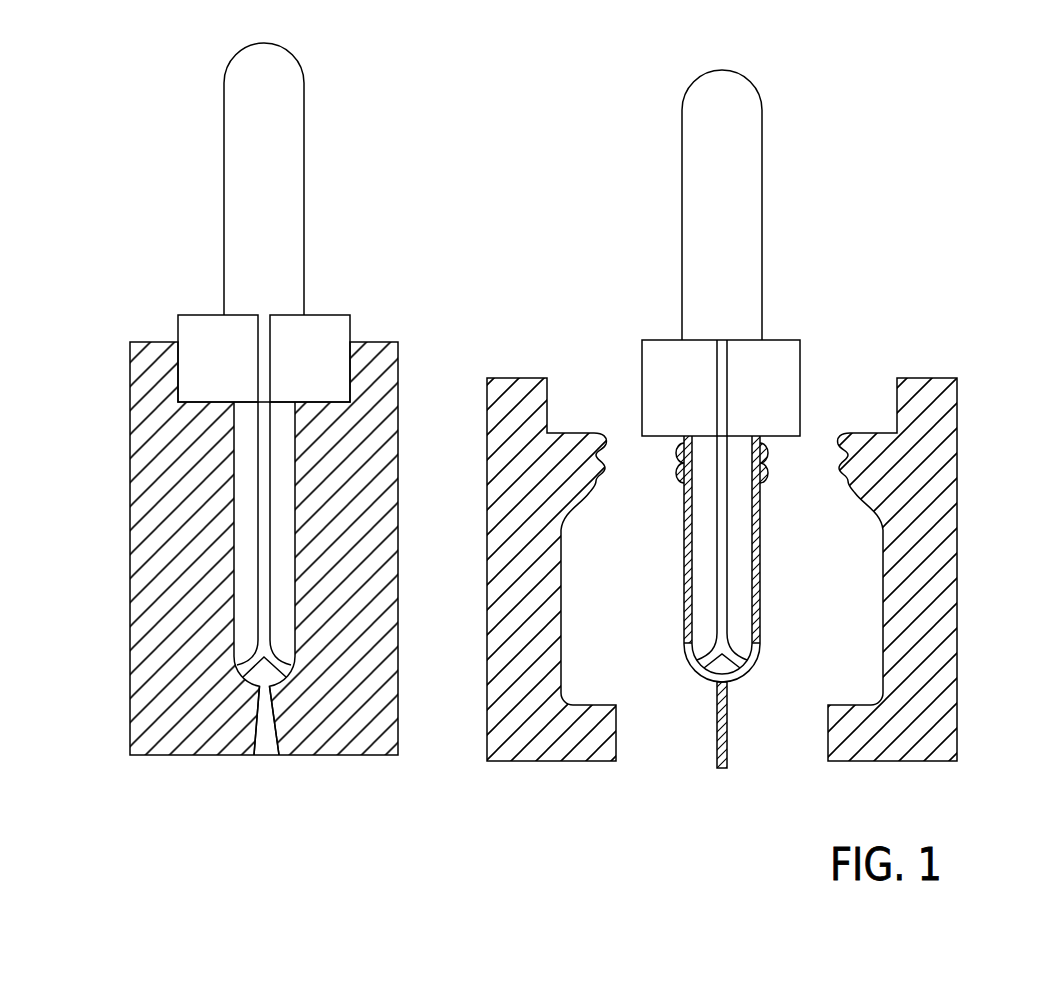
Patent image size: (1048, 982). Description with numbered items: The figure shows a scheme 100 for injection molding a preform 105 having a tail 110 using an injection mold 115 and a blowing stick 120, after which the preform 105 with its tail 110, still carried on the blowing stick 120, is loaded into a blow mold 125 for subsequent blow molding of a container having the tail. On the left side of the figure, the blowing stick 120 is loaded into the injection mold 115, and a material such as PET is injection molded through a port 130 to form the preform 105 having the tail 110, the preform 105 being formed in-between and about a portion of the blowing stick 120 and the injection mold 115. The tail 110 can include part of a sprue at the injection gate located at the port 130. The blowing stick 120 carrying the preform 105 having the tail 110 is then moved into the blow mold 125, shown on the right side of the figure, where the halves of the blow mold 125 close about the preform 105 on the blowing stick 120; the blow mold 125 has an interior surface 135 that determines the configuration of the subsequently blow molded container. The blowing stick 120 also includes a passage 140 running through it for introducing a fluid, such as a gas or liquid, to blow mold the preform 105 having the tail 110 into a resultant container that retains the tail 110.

The scheme 100 is at (138, 86).
The preform 105 is at (761, 543).
The tail 110 is at (710, 742).
The injection mold 115 is at (128, 733).
The blowing stick 120 is at (333, 305).
The blow mold 125 is at (485, 738).
The port 130 is at (264, 743).
The interior surface 135 is at (563, 617).
The passage 140 is at (727, 397).